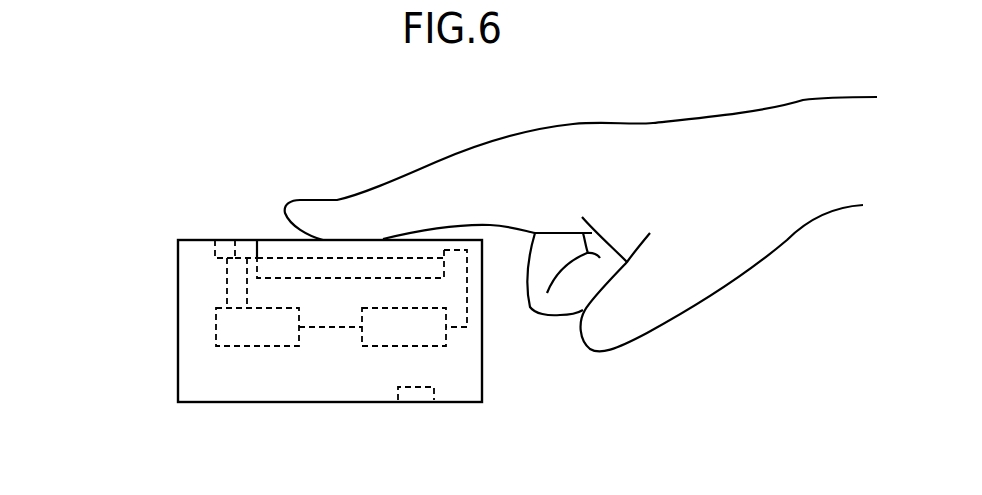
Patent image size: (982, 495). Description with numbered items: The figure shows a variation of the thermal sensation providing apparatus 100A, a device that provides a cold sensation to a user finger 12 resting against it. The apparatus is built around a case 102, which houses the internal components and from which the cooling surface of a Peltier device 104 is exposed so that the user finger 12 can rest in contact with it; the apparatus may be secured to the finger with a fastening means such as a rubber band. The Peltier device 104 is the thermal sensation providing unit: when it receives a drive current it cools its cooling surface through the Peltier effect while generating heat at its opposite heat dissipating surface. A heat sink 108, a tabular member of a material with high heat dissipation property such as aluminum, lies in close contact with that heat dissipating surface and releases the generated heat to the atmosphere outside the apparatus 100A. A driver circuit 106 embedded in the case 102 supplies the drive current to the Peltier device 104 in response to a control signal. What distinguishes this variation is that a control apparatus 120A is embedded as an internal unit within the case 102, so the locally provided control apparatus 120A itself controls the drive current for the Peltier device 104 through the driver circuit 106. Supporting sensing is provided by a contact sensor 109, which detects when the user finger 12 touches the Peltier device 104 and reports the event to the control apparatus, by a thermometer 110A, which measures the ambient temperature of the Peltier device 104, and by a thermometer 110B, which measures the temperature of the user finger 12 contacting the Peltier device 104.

The user finger 12 is at (338, 200).
The thermal sensation providing apparatus 100A is at (305, 291).
The case 102 is at (483, 353).
The Peltier device 104 is at (277, 250).
The driver circuit 106 is at (390, 346).
The heat sink 108 is at (432, 272).
The contact sensor 109 is at (225, 238).
The thermometer 110A is at (417, 393).
The thermometer 110B is at (247, 238).
The control apparatus 120A is at (250, 346).